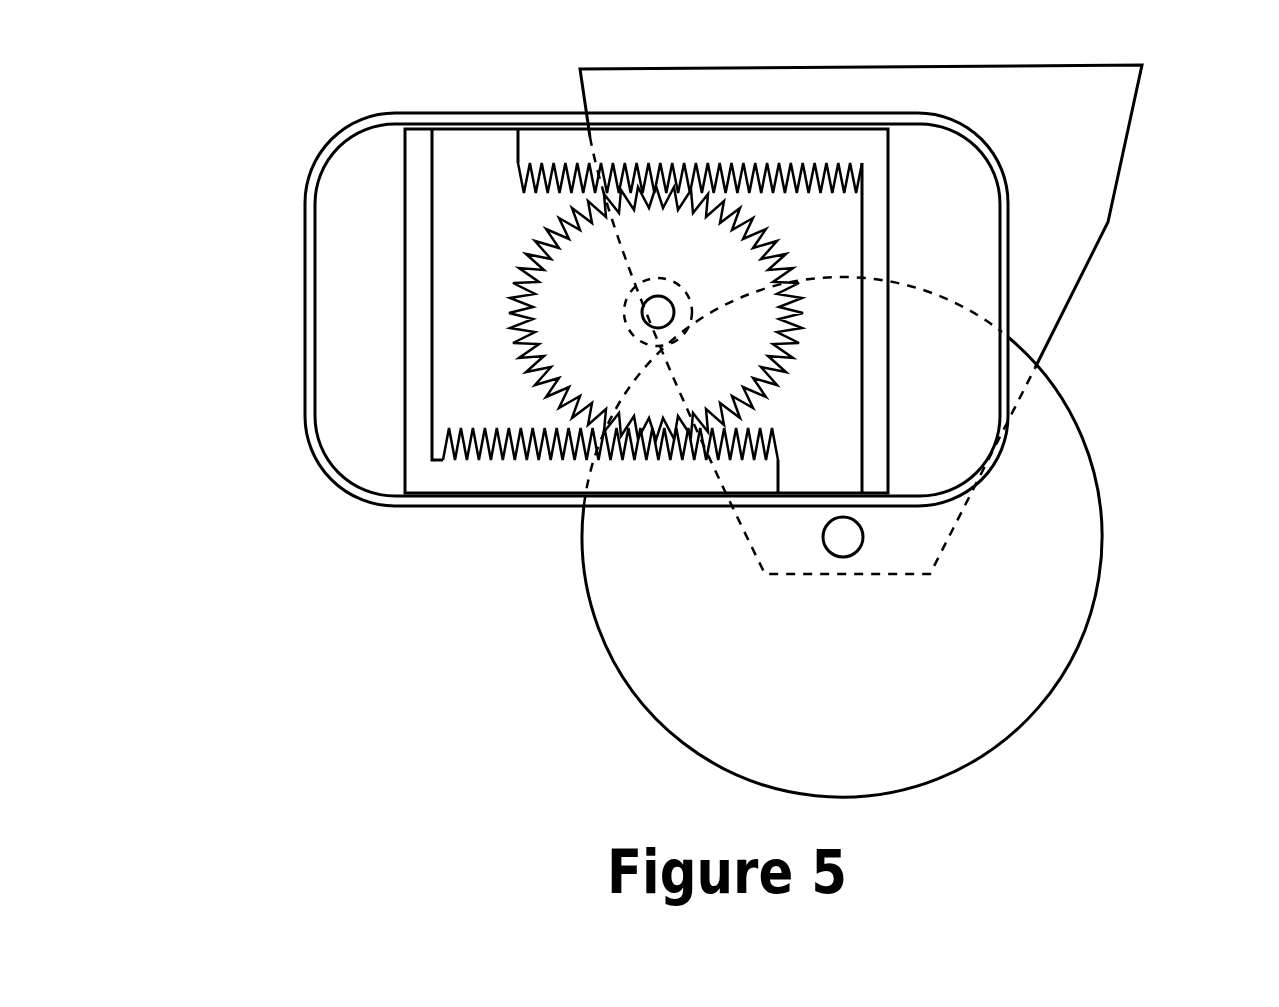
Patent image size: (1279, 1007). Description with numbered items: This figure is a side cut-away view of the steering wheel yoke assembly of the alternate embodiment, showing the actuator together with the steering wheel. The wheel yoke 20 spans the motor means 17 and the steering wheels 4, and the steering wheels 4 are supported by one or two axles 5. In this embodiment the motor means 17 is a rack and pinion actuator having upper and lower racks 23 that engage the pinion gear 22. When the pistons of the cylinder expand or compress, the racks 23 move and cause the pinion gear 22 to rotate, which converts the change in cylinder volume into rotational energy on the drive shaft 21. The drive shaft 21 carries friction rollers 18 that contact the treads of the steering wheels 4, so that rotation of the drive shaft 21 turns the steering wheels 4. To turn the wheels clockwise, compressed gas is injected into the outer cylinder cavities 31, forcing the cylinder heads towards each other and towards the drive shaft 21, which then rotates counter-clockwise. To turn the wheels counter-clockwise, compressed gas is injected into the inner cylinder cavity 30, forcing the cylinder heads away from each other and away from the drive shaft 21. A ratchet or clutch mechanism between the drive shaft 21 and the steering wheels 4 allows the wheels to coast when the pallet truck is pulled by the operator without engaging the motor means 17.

The steering wheel 4 is at (727, 707).
The axle 5 is at (843, 538).
The motor means 17 is at (350, 140).
The friction roller 18 is at (626, 313).
The wheel yoke 20 is at (1052, 177).
The drive shaft 21 is at (648, 316).
The pinion gear 22 is at (572, 264).
The rack 23 is at (556, 148).
The inner cylinder cavity 30 is at (469, 389).
The outer cylinder cavity 31 is at (349, 335).